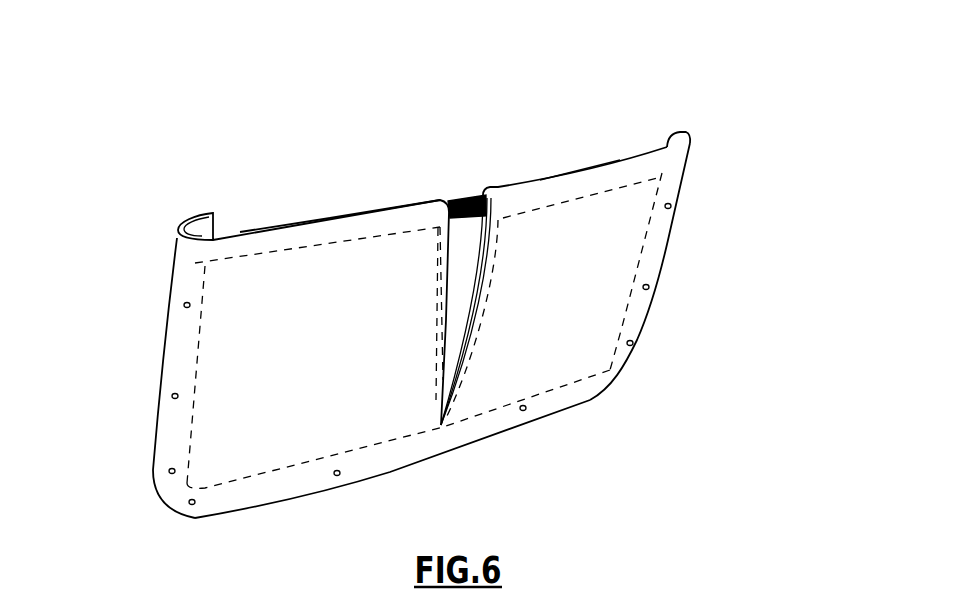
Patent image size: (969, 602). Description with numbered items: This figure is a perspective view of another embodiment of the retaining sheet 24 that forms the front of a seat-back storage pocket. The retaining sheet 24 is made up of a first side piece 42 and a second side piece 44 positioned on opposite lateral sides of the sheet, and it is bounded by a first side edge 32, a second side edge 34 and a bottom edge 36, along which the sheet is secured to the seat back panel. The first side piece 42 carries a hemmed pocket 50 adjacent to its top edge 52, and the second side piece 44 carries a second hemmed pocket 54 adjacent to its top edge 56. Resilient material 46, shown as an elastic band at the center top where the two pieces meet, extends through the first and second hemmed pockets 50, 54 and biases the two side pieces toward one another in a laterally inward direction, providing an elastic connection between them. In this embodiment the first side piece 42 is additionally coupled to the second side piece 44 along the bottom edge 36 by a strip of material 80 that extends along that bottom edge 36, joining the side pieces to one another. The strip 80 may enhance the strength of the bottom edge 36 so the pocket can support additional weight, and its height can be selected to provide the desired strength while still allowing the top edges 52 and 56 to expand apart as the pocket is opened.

The retaining sheet 24 is at (427, 305).
The first side edge 32 is at (162, 352).
The second side edge 34 is at (668, 255).
The bottom edge 36 is at (513, 433).
The first side piece 42 is at (256, 386).
The second side piece 44 is at (617, 252).
The resilient material 46 is at (463, 196).
The hemmed pocket 50 is at (315, 230).
The top edge of the first side piece 52 is at (372, 208).
The second hemmed pocket 54 is at (590, 187).
The top edge of the second side piece 56 is at (648, 150).
The strip of material 80 is at (443, 440).